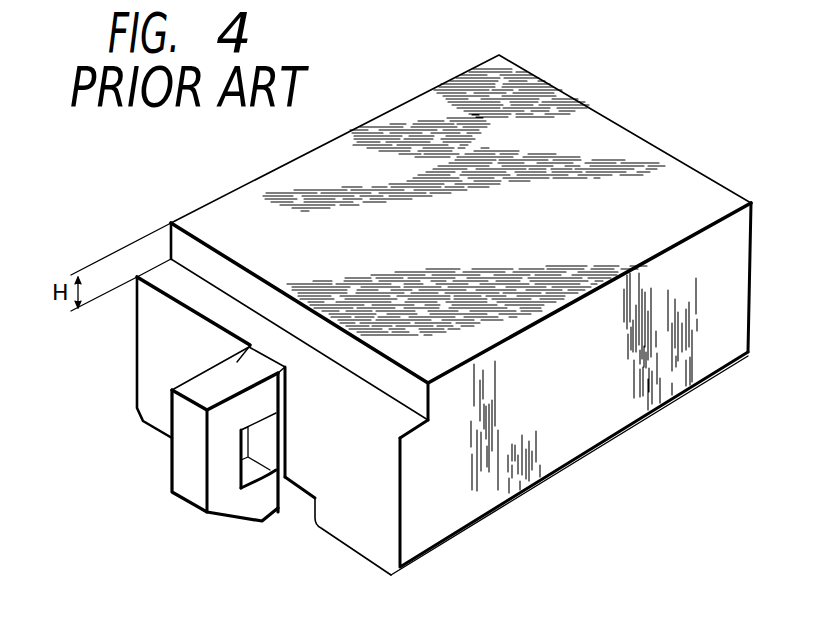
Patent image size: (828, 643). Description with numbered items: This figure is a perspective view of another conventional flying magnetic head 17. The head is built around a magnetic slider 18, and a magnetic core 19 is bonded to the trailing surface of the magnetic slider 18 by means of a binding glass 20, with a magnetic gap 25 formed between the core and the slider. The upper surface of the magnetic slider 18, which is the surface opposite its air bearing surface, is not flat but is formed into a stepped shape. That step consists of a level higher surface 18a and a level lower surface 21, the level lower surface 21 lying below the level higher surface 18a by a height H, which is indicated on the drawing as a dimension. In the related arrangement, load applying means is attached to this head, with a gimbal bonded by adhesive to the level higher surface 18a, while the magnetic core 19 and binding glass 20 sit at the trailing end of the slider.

The flying magnetic head 17 is at (431, 520).
The magnetic slider 18 is at (256, 198).
The level higher surface 18a is at (530, 303).
The magnetic core 19 is at (215, 502).
The binding glass 20 is at (272, 489).
The level lower surface 21 is at (185, 292).
The magnetic gap 25 is at (249, 359).